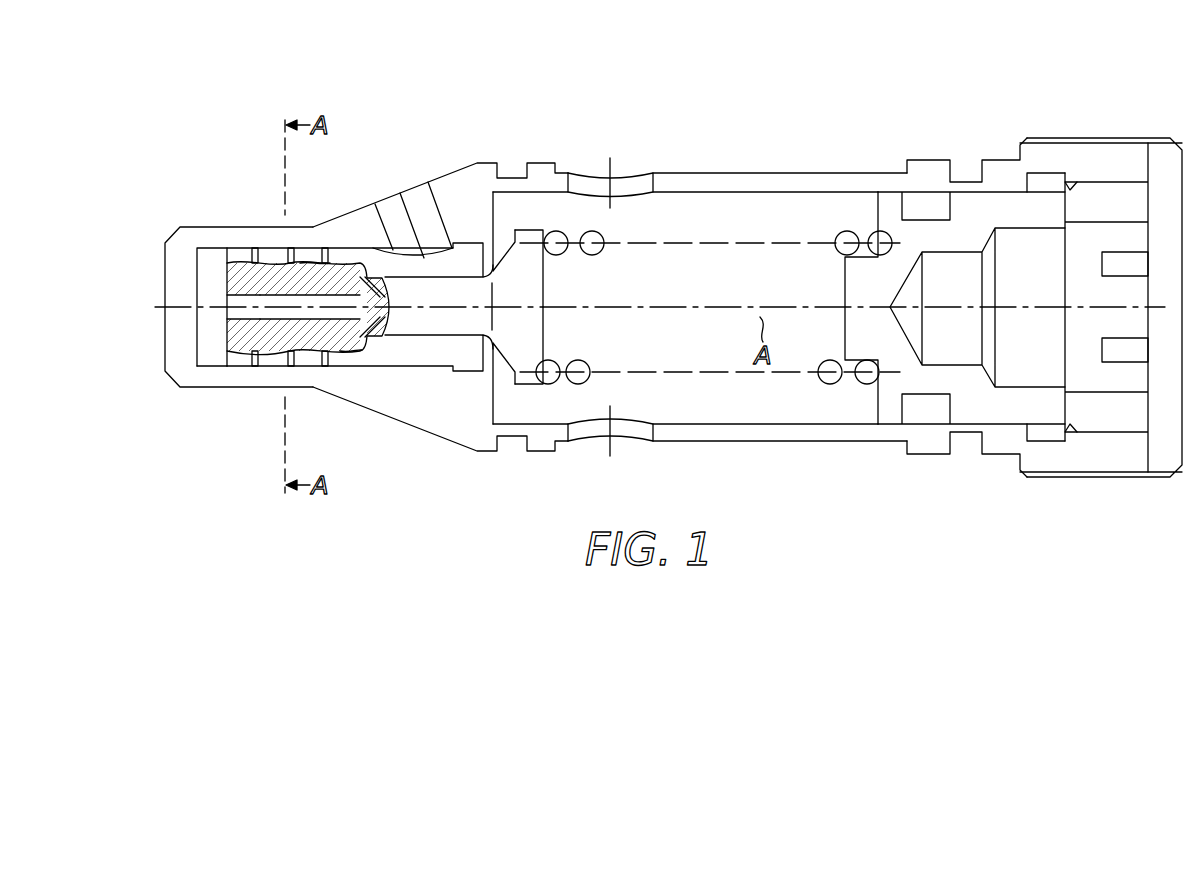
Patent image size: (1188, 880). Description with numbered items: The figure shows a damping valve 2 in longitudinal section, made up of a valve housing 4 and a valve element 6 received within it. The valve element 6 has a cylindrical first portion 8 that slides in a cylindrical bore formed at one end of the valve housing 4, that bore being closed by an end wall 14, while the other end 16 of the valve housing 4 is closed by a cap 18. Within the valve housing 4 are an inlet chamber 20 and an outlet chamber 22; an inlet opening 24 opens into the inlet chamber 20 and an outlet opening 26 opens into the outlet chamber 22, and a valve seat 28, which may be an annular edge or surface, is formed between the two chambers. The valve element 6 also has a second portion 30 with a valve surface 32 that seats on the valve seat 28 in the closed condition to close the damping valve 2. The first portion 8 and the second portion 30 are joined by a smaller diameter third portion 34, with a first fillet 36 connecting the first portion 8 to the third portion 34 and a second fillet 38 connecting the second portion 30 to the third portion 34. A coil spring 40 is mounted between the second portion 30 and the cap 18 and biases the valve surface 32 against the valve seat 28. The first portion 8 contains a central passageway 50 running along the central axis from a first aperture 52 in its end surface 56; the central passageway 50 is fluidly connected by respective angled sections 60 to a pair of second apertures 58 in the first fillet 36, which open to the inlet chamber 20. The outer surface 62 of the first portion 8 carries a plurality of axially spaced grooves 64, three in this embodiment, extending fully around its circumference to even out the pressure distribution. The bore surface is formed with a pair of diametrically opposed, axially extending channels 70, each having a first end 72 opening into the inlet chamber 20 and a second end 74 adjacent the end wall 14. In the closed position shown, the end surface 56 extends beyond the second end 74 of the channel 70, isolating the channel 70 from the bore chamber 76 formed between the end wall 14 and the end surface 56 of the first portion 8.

The damping valve 2 is at (1036, 84).
The valve housing 4 is at (847, 172).
The valve element 6 is at (535, 378).
The cylindrical first portion 8 is at (347, 257).
The end wall 14 is at (175, 338).
The other end 16 is at (930, 468).
The cap 18 is at (1107, 452).
The inlet chamber 20 is at (452, 357).
The outlet chamber 22 is at (745, 207).
The inlet opening 24 is at (417, 198).
The outlet opening 26 is at (636, 182).
The valve seat 28 is at (497, 210).
The second portion 30 is at (522, 358).
The valve surface 32 is at (506, 242).
The third portion 34 is at (425, 323).
The first fillet 36 is at (367, 358).
The second fillet 38 is at (475, 347).
The coil spring 40 is at (588, 360).
The central passageway 50 is at (272, 313).
The first aperture 52 is at (237, 302).
The end surface 56 is at (228, 283).
The second apertures 58 is at (372, 276).
The angled sections 60 is at (373, 348).
The outer surface 62 is at (308, 250).
The grooves 64 is at (294, 245).
The channels 70 is at (288, 245).
The first end 72 is at (470, 243).
The second end 74 is at (263, 245).
The bore chamber 76 is at (212, 360).